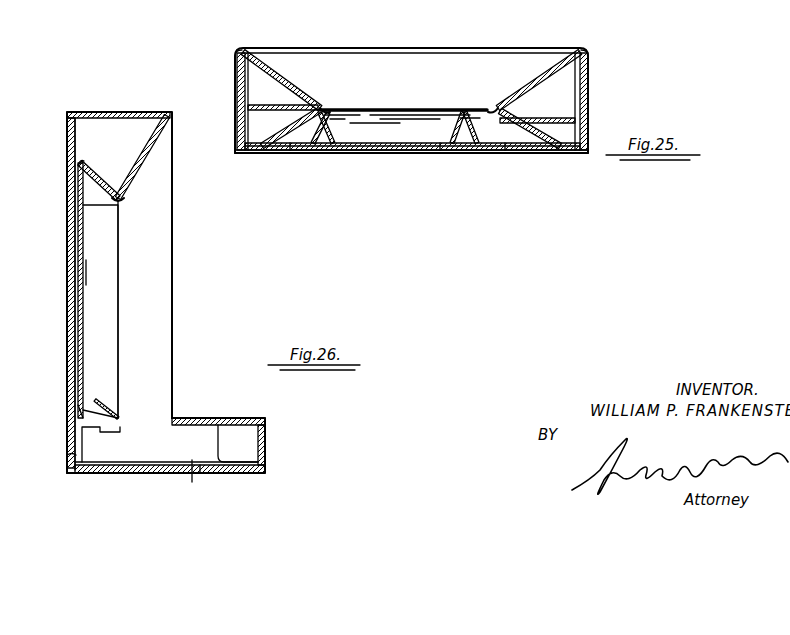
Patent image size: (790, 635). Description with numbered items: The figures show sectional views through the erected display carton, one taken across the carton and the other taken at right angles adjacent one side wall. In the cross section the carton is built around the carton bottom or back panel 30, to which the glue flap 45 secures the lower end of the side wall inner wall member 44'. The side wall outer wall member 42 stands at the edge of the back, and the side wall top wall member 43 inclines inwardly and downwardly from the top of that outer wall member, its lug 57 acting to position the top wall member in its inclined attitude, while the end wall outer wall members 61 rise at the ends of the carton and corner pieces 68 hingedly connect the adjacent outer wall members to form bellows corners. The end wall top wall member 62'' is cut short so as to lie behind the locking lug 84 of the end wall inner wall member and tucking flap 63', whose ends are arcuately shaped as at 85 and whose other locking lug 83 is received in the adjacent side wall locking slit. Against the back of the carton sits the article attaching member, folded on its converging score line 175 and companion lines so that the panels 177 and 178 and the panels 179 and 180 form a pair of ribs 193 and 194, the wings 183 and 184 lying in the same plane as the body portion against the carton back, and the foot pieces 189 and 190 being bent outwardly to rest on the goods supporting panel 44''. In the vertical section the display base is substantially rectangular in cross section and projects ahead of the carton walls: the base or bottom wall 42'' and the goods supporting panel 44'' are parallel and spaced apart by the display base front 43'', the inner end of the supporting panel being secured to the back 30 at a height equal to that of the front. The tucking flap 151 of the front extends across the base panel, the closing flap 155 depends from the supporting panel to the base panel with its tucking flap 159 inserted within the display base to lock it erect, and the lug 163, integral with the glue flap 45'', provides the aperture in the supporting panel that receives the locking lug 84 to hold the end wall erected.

In FIG. 25, the side wall top wall member panel 43 is at (411, 86).
In FIG. 26, the side wall top wall member panel 43 is at (142, 157).
In FIG. 25, the corner pieces 68 is at (241, 71).
In FIG. 25, the end wall outer wall member panel 61 is at (240, 112).
In FIG. 25, the lug 57 is at (589, 114).
In FIG. 25, the carton bottom 30 is at (403, 150).
In FIG. 26, the carton bottom 30 is at (68, 280).
In FIG. 25, the glue flap 45 is at (412, 165).
In FIG. 26, the glue flap 45 is at (59, 294).
In FIG. 25, the end wall top wall member panel 62'' is at (411, 80).
In FIG. 26, the end wall top wall member panel 62'' is at (190, 268).
In FIG. 25, the end wall inner wall member and tucking flap 63' is at (416, 146).
In FIG. 26, the end wall inner wall member and tucking flap 63' is at (135, 311).
In FIG. 25, the side wall inner wall member panel 44' is at (403, 99).
In FIG. 26, the side wall inner wall member panel 44' is at (99, 171).
In FIG. 25, the rib 193 is at (328, 108).
In FIG. 25, the rib 194 is at (484, 109).
In FIG. 25, the panel 177 is at (338, 128).
In FIG. 25, the panel 178 is at (324, 150).
In FIG. 25, the panel 179 is at (450, 124).
In FIG. 25, the panel 180 is at (472, 125).
In FIG. 25, the wing 183 is at (300, 150).
In FIG. 25, the score or fold line 175 is at (440, 150).
In FIG. 25, the wing 184 is at (504, 150).
In FIG. 26, the side wall outer wall member panel 42 is at (119, 279).
In FIG. 26, the locking lug 83 is at (124, 195).
In FIG. 26, the arcuate end 85 is at (92, 208).
In FIG. 26, the foot piece 189 is at (86, 272).
In FIG. 26, the foot piece 190 is at (108, 418).
In FIG. 26, the glue flap 45'' is at (55, 413).
In FIG. 26, the lug 163 is at (72, 452).
In FIG. 26, the base or bottom wall panel 42'' is at (166, 460).
In FIG. 26, the locking lug 84 is at (118, 430).
In FIG. 26, the closing flap 155 is at (190, 481).
In FIG. 26, the tucking flap 159 is at (216, 474).
In FIG. 26, the tucking flap 151 is at (250, 452).
In FIG. 26, the display base front panel 43'' is at (285, 445).
In FIG. 26, the top or article supporting panel 44'' is at (215, 400).